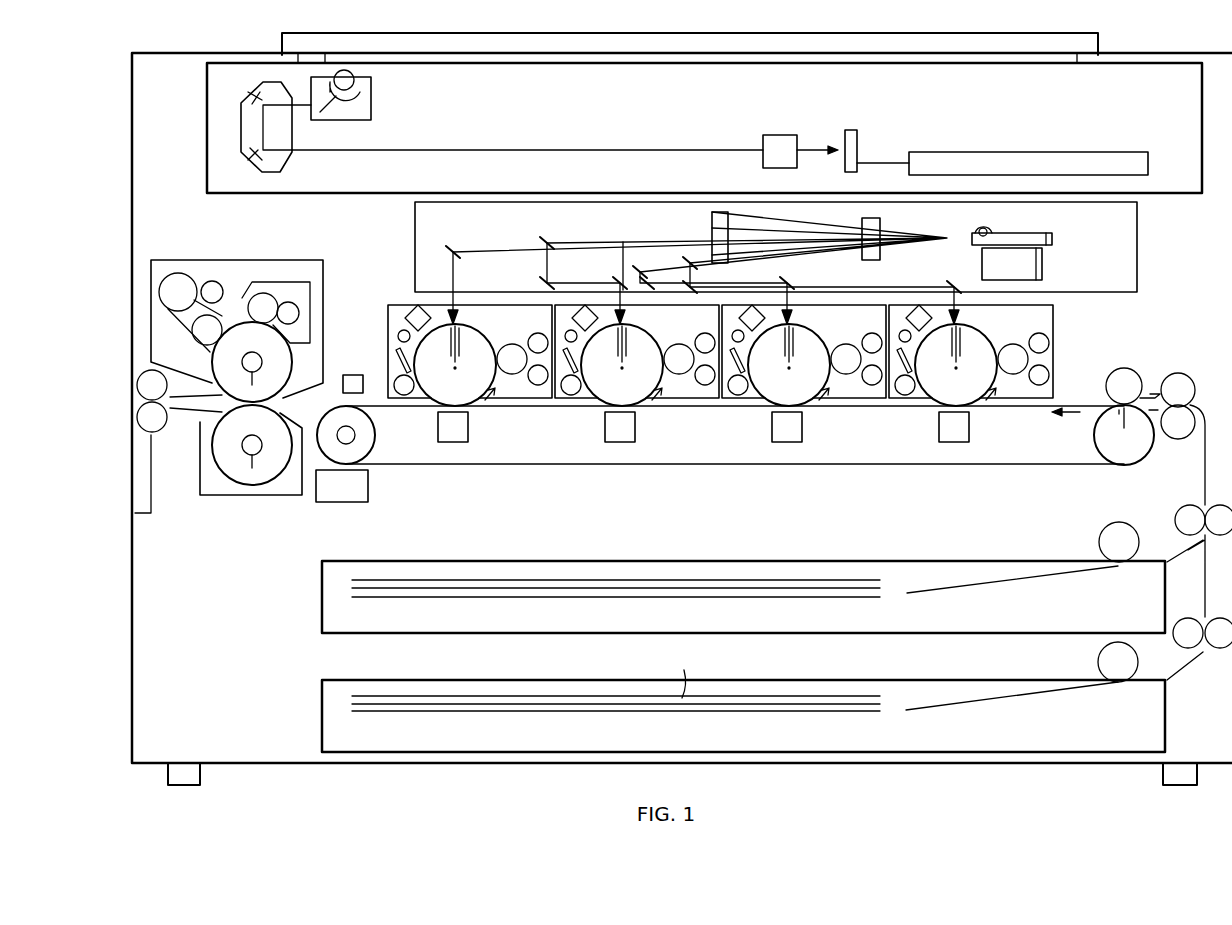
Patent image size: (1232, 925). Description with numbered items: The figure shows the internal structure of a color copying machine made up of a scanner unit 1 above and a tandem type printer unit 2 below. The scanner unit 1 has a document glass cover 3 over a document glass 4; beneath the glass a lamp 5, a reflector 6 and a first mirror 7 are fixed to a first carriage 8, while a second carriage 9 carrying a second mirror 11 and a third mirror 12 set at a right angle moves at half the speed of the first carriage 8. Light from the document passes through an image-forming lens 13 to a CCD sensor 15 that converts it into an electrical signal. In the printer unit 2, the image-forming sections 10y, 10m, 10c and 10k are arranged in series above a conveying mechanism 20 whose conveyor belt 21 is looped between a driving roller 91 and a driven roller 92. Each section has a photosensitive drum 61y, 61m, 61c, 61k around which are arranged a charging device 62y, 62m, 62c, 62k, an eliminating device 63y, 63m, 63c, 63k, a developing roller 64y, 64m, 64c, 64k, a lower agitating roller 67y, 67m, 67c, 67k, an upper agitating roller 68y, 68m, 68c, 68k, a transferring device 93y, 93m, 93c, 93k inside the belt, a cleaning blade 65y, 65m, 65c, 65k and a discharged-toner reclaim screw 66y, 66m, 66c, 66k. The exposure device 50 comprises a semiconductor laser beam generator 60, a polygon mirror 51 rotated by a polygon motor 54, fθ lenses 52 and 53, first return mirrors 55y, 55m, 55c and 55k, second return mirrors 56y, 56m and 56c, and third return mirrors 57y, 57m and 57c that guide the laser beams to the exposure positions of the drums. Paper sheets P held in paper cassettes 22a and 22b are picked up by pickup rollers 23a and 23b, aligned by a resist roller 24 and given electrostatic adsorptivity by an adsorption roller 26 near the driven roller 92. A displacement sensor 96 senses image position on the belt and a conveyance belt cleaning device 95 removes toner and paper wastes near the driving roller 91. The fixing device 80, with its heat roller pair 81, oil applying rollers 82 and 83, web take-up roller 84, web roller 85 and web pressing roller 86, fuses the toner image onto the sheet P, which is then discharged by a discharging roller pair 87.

The scanner unit 1 is at (1175, 72).
The printer unit 2 is at (385, 243).
The document glass cover 3 is at (282, 40).
The document glass 4 is at (552, 64).
The lamp 5 is at (356, 80).
The reflector 6 is at (362, 100).
The first mirror 7 is at (330, 110).
The first carriage 8 is at (372, 88).
The second carriage 9 is at (292, 162).
The fourth image-forming section 10k is at (490, 400).
The third image-forming section 10c is at (657, 400).
The second image-forming section 10m is at (820, 400).
The first image-forming section 10y is at (990, 400).
The second mirror 11 is at (256, 94).
The third mirror 12 is at (255, 158).
The image-forming lens 13 is at (780, 135).
The CCD sensor 15 is at (851, 130).
The conveying mechanism 20 is at (1023, 465).
The conveyor belt 21 is at (1078, 406).
The paper cassette 22a is at (713, 580).
The paper cassette 22b is at (322, 713).
The pickup roller 23a is at (1099, 540).
The pickup roller 23b is at (1098, 662).
The resist roller 24 is at (1178, 373).
The adsorption roller 26 is at (1126, 368).
The exposure device 50 is at (1137, 240).
The polygon mirror 51 is at (1052, 239).
The fθ lens 52 is at (880, 224).
The fθ lens 53 is at (728, 220).
The polygon motor 54 is at (1042, 272).
The first return mirror 55k is at (452, 250).
The first return mirror 55c is at (546, 242).
The first return mirror 55m is at (633, 268).
The first return mirror 55y is at (690, 260).
The second return mirror 56c is at (546, 283).
The second return mirror 56m is at (648, 280).
The second return mirror 56y is at (688, 285).
The third return mirror 57c is at (620, 276).
The third return mirror 57m is at (788, 280).
The third return mirror 57y is at (954, 282).
The semiconductor laser beam generator 60 is at (990, 226).
The photosensitive drum 61k is at (474, 335).
The photosensitive drum 61c is at (639, 335).
The photosensitive drum 61m is at (806, 335).
The photosensitive drum 61y is at (975, 333).
The charging device 62k is at (410, 306).
The charging device 62c is at (590, 305).
The charging device 62m is at (765, 306).
The charging device 62y is at (918, 305).
The eliminating device 63k is at (398, 334).
The eliminating device 63c is at (571, 330).
The eliminating device 63m is at (736, 330).
The eliminating device 63y is at (902, 330).
The developing roller 64k is at (512, 375).
The developing roller 64c is at (679, 375).
The developing roller 64m is at (846, 375).
The developing roller 64y is at (1013, 375).
The cleaning blade 65k is at (396, 352).
The cleaning blade 65c is at (565, 352).
The cleaning blade 65m is at (732, 352).
The cleaning blade 65y is at (899, 352).
The discharged-toner reclaim screw 66k is at (395, 380).
The discharged-toner reclaim screw 66c is at (573, 396).
The discharged-toner reclaim screw 66m is at (740, 396).
The discharged-toner reclaim screw 66y is at (907, 396).
The lower agitating roller 67k is at (538, 386).
The lower agitating roller 67c is at (705, 386).
The lower agitating roller 67m is at (872, 386).
The lower agitating roller 67y is at (1040, 386).
The upper agitating roller 68k is at (537, 333).
The upper agitating roller 68c is at (704, 333).
The upper agitating roller 68m is at (871, 333).
The upper agitating roller 68y is at (1049, 340).
The fixing device 80 is at (333, 281).
The heat roller pair 81 is at (252, 486).
The oil applying roller 82 is at (290, 302).
The oil applying roller 83 is at (262, 293).
The web take-up roller 84 is at (212, 281).
The web roller 85 is at (180, 273).
The web pressing roller 86 is at (196, 340).
The discharging roller pair 87 is at (165, 445).
The driving roller 91 is at (368, 466).
The driven roller 92 is at (1098, 458).
The transferring device 93k is at (453, 443).
The transferring device 93c is at (620, 443).
The transferring device 93m is at (787, 443).
The transferring device 93y is at (954, 443).
The conveyance belt cleaning device 95 is at (342, 503).
The displacement sensor 96 is at (343, 385).
The paper sheet P is at (684, 580).